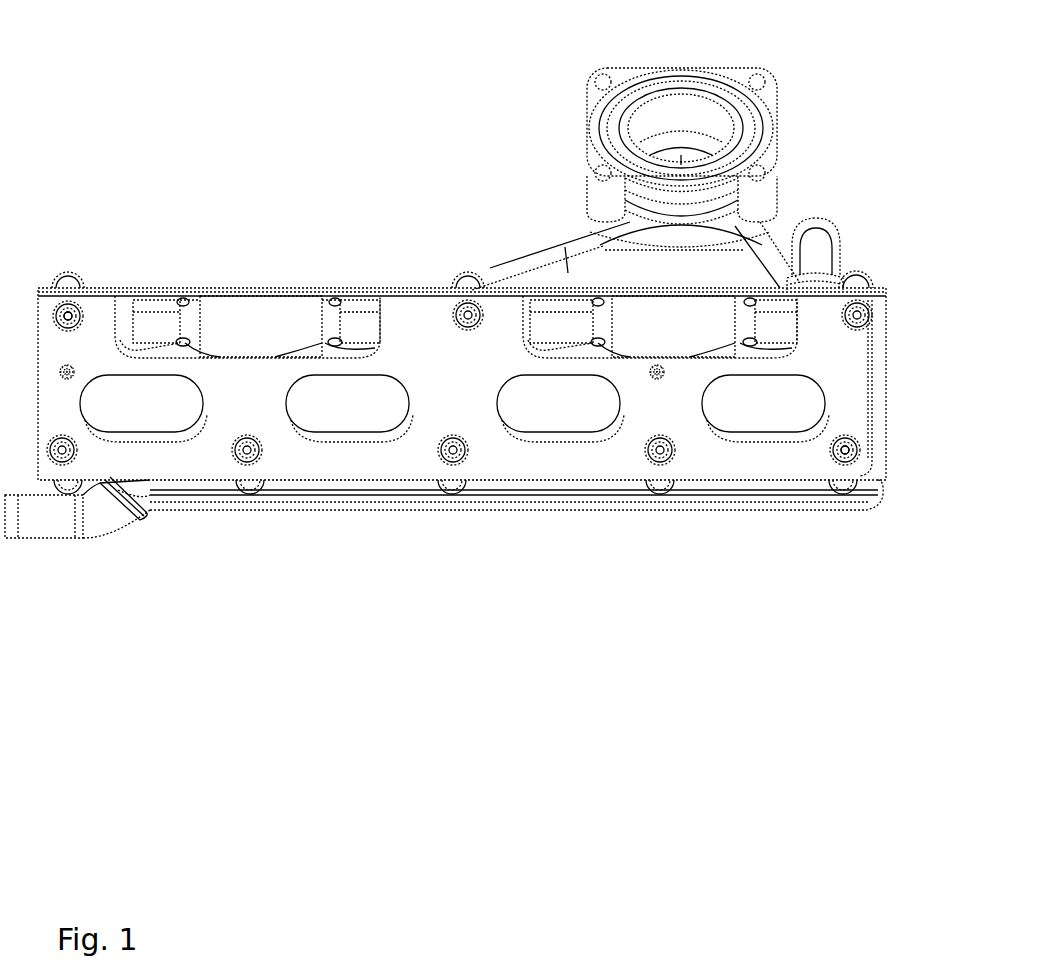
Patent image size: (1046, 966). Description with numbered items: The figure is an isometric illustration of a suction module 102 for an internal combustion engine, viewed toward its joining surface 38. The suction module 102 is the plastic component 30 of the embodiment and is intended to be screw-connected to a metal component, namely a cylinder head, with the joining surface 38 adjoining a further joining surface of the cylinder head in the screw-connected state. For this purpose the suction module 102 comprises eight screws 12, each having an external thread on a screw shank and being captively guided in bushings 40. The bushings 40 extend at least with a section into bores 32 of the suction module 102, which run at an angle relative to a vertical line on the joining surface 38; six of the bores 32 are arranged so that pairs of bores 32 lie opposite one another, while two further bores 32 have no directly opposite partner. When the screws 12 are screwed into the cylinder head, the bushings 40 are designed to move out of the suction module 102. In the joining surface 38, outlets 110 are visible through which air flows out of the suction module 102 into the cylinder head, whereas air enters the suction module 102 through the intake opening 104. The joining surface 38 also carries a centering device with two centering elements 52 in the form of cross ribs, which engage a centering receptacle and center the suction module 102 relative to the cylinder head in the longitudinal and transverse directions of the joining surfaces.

The screw 12 is at (72, 279).
The plastic component 30 is at (276, 284).
The bore 32 is at (80, 308).
The joining surface 38 is at (231, 411).
The bushing 40 is at (80, 326).
The centering element 52 is at (68, 382).
The suction module 102 is at (410, 283).
The intake opening 104 is at (662, 80).
The outlet 110 is at (121, 421).